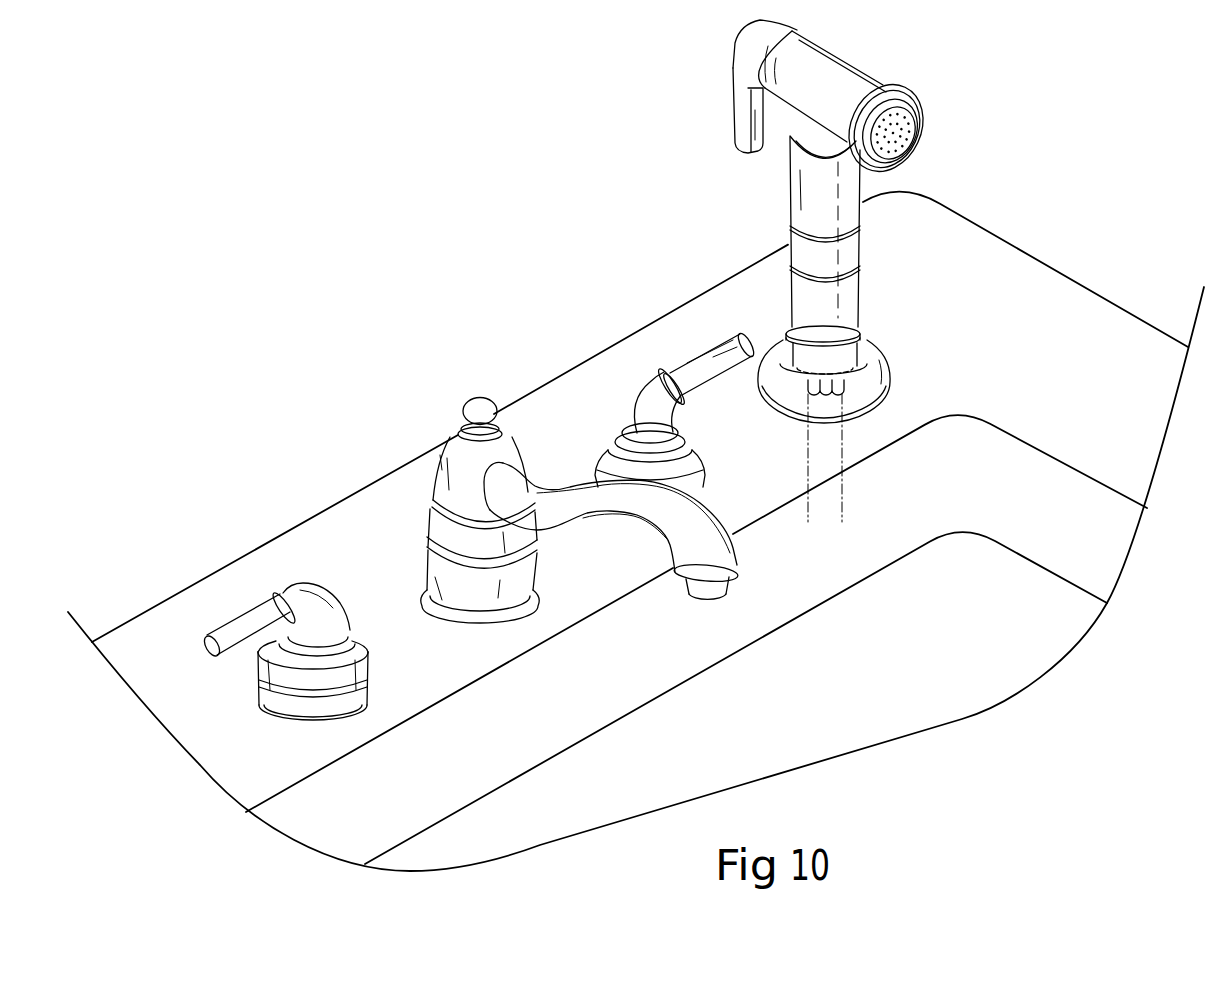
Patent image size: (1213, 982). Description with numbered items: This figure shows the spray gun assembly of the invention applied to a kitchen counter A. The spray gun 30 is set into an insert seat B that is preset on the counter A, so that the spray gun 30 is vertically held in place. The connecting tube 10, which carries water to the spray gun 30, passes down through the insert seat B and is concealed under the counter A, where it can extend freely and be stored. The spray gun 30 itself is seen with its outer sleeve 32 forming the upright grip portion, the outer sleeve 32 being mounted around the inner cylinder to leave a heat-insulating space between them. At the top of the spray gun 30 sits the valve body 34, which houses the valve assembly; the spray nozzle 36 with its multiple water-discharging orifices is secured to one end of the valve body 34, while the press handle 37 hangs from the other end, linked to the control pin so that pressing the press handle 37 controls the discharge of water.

The connecting tube 10 is at (862, 483).
The spray gun 30 is at (819, 267).
The outer sleeve 32 is at (863, 245).
The valve body 34 is at (833, 63).
The spray nozzle 36 is at (918, 127).
The press handle 37 is at (738, 115).
The counter A is at (1115, 268).
The insert seat B is at (917, 358).